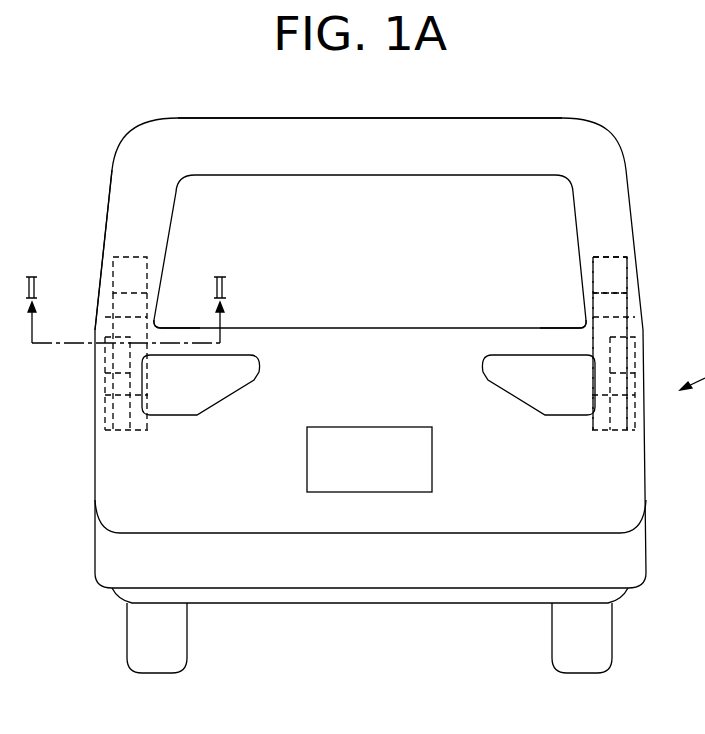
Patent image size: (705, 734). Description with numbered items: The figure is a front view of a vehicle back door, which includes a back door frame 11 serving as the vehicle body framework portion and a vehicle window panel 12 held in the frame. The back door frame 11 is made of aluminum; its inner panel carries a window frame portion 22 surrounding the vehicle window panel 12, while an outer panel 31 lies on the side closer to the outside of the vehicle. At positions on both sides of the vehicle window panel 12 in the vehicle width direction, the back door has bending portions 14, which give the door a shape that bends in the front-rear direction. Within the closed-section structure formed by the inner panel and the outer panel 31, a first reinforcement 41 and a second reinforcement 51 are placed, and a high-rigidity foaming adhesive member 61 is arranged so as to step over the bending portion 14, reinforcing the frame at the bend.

The back door frame 11 is at (605, 159).
The vehicle window panel 12 is at (540, 218).
The bending portion 14 is at (158, 328).
The window frame portion 22 is at (114, 194).
The outer panel 31 is at (430, 128).
The first reinforcement 41 is at (104, 410).
The second reinforcement 51 is at (113, 296).
The high-rigidity foaming adhesive member 61 is at (104, 365).